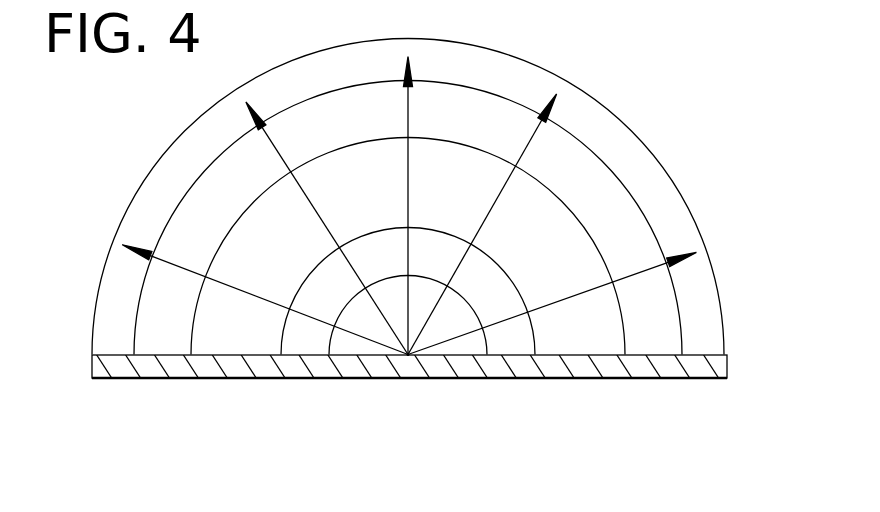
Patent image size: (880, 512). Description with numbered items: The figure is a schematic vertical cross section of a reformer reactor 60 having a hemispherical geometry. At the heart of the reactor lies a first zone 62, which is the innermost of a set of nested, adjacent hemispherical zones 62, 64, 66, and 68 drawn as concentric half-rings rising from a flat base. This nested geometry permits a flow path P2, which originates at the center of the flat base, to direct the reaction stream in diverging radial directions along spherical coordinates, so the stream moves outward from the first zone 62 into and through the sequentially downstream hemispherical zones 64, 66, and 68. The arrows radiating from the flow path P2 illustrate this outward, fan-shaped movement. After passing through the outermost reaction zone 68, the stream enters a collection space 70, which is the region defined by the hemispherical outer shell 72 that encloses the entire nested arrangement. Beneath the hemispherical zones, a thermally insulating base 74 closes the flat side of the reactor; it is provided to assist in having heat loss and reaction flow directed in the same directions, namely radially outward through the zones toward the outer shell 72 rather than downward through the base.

The hemispherical reactor 60 is at (668, 98).
The first zone 62 is at (360, 332).
The hemispherical zone 64 is at (506, 342).
The hemispherical zone 66 is at (585, 327).
The hemispherical zone 68 is at (648, 323).
The collection space 70 is at (637, 193).
The hemispherical outer shell 72 is at (136, 200).
The thermally insulating base 74 is at (128, 365).
The flow path P2 is at (408, 356).